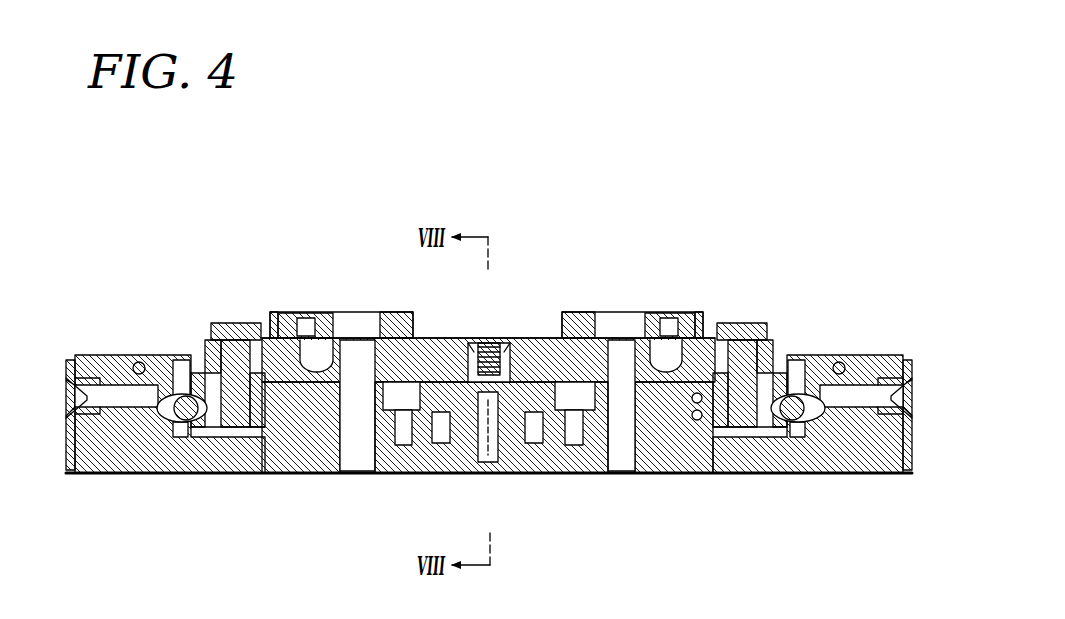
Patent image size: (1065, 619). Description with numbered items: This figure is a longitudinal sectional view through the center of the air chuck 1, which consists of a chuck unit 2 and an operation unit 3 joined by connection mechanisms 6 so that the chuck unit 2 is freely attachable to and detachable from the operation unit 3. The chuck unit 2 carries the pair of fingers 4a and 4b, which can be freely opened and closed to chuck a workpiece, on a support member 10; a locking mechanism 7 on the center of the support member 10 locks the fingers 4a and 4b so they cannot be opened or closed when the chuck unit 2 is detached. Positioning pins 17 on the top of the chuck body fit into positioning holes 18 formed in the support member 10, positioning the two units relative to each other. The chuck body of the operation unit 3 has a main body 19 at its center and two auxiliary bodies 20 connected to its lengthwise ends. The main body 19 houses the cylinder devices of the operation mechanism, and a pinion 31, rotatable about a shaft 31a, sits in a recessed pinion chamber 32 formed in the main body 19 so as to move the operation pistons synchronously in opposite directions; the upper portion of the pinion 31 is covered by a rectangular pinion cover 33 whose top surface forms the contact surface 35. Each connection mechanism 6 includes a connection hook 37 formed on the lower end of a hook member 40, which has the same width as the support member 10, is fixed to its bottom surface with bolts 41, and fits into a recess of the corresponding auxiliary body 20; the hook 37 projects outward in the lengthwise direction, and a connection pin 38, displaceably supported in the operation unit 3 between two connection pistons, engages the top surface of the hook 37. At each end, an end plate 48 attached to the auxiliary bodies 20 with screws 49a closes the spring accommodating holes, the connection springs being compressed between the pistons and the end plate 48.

The air chuck 1 is at (678, 118).
The chuck unit 2 is at (559, 158).
The operation unit 3 is at (657, 578).
The finger 4a is at (393, 312).
The finger 4b is at (582, 310).
The connection mechanism 6 is at (166, 398).
The locking mechanism 7 is at (505, 336).
The support member 10 is at (450, 362).
The positioning pin 17 is at (300, 443).
The positioning hole 18 is at (318, 335).
The main body 19 is at (587, 457).
The auxiliary body 20 is at (233, 453).
The pinion 31 is at (455, 452).
The shaft 31a is at (483, 462).
The pinion chamber 32 is at (550, 460).
The pinion cover 33 is at (412, 460).
The contact surface 35 is at (522, 367).
The connection hook 37 is at (193, 427).
The connection pin 38 is at (170, 420).
The hook member 40 is at (184, 360).
The bolt 41 is at (248, 323).
The end plate 48 is at (56, 472).
The screw 49a is at (72, 390).